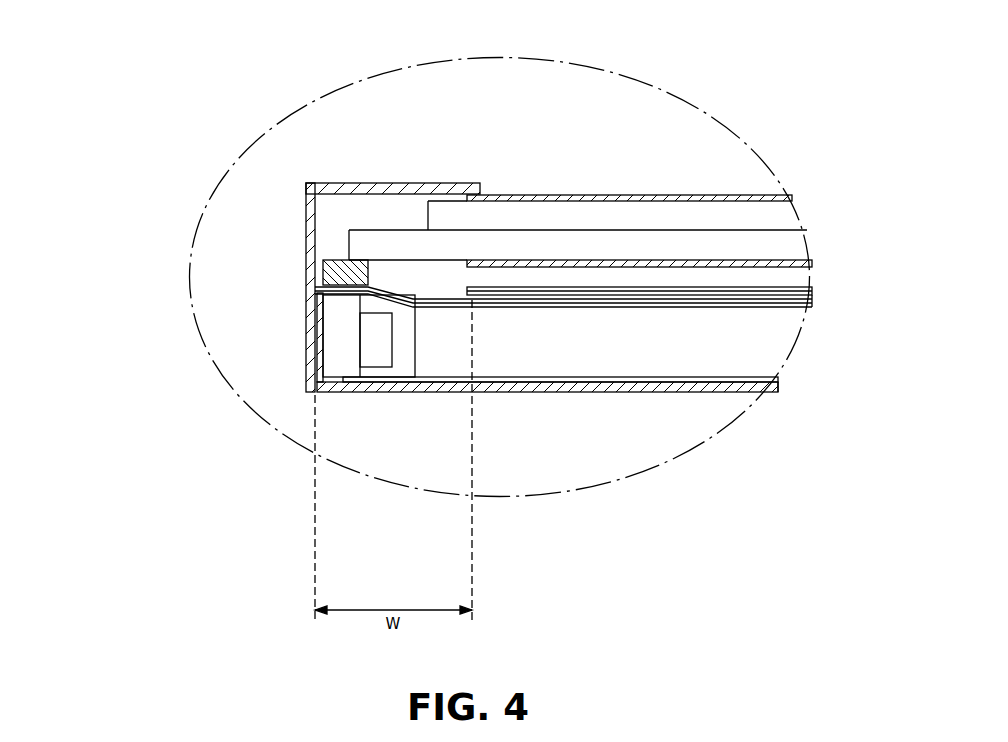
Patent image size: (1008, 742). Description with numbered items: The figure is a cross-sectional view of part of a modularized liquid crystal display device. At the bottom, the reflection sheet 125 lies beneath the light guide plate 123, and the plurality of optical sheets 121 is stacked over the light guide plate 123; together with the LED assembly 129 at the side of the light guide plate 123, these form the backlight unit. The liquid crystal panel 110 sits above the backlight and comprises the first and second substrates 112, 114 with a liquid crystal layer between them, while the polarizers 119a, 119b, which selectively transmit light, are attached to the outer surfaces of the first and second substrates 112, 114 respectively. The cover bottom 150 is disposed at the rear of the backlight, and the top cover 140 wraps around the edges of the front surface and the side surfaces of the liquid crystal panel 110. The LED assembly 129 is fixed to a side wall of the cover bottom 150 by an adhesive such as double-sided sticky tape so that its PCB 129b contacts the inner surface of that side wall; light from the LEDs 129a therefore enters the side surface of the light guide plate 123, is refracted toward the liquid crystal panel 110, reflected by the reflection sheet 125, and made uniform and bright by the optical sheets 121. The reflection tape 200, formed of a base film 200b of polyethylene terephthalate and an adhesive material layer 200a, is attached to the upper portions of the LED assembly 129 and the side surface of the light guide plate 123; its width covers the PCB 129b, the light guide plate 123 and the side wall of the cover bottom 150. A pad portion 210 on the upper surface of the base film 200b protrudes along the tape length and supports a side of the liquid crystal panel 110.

The liquid crystal panel 110 is at (582, 135).
The first substrate 112 is at (728, 245).
The second substrate 114 is at (667, 215).
The polarizer 119a is at (812, 265).
The polarizer 119b is at (790, 195).
The optical sheets 121 is at (812, 300).
The light guide plate 123 is at (780, 340).
The reflection sheet 125 is at (780, 383).
The LED assembly 129 is at (316, 422).
The LEDs 129a is at (375, 357).
The PCB 129b is at (343, 358).
The top cover 140 is at (323, 188).
The cover bottom 150 is at (600, 395).
The reflection tape 200 is at (420, 273).
The adhesive material layer 200a is at (318, 289).
The base film 200b is at (322, 284).
The pad portion 210 is at (324, 260).